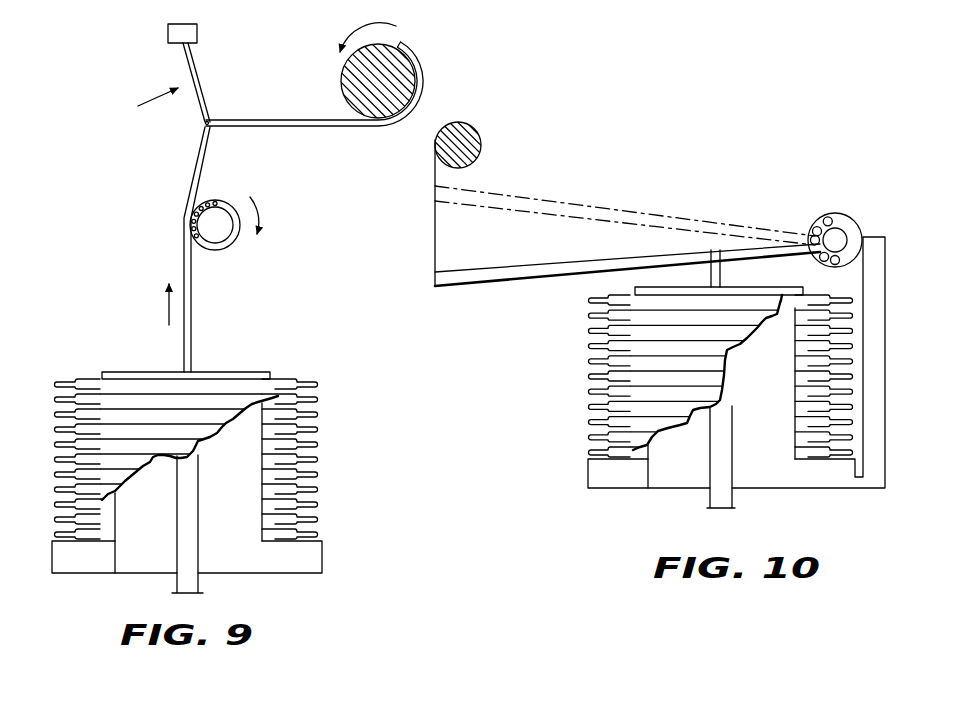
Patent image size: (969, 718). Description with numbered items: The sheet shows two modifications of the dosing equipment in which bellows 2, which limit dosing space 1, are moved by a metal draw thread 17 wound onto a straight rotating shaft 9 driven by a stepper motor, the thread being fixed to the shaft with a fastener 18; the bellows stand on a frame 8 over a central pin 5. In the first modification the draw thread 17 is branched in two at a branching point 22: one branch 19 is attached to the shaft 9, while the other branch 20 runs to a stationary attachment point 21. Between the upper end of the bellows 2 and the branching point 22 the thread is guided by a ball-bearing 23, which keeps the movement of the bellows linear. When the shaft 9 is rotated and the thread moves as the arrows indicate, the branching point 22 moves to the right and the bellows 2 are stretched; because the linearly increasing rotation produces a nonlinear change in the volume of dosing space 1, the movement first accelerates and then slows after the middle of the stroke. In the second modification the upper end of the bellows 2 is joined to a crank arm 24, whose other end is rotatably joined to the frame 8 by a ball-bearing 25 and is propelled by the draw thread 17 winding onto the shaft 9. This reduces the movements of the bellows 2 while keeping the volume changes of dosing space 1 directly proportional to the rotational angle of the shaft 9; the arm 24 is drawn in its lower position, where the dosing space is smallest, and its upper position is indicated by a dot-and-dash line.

In FIG. 9, the dosing space 1 is at (108, 538).
In FIG. 10, the dosing space 1 is at (803, 447).
In FIG. 9, the bellows 2 is at (317, 434).
In FIG. 10, the bellows 2 is at (588, 318).
In FIG. 9, the center pin 5 is at (195, 582).
In FIG. 10, the center pin 5 is at (715, 498).
In FIG. 9, the frame 8 is at (313, 562).
In FIG. 10, the frame 8 is at (597, 478).
In FIG. 9, the rotating shaft 9 is at (345, 73).
In FIG. 10, the rotating shaft 9 is at (476, 140).
In FIG. 9, the draw thread 17 is at (193, 341).
In FIG. 10, the draw thread 17 is at (433, 175).
In FIG. 9, the fastener 18 is at (398, 43).
In FIG. 9, the branch 19 is at (313, 124).
In FIG. 9, the branch 20 is at (200, 77).
In FIG. 9, the stationary attachment point 21 is at (168, 32).
In FIG. 9, the branching point 22 is at (205, 127).
In FIG. 9, the ball-bearing 23 is at (232, 247).
In FIG. 10, the crank arm 24 is at (463, 277).
In FIG. 10, the ball-bearing 25 is at (818, 222).